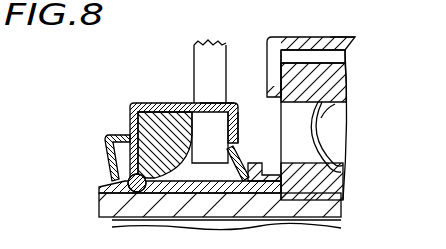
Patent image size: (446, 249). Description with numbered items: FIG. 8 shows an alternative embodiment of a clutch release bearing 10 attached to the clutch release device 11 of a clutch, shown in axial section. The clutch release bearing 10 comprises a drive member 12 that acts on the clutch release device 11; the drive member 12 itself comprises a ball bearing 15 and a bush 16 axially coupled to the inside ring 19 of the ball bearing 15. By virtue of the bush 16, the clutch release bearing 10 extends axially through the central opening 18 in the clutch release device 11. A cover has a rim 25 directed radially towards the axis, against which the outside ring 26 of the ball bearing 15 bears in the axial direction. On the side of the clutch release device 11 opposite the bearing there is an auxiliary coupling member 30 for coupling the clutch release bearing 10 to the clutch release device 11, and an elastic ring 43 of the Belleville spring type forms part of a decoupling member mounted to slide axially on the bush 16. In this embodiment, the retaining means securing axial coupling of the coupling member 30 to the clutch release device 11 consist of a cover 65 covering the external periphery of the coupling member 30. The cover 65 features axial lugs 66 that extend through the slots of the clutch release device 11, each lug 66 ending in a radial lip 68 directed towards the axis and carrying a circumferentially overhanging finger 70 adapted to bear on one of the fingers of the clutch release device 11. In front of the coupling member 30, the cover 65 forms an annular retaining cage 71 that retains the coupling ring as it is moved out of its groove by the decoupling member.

The clutch release bearing 10 is at (342, 33).
The clutch release device 11 is at (191, 44).
The drive member 12 is at (98, 198).
The ball bearing 15 is at (344, 63).
The bush 16 is at (99, 217).
The central opening 18 is at (178, 124).
The inside ring 19 is at (330, 190).
The rim 25 is at (267, 58).
The outside ring 26 is at (338, 78).
The coupling member 30 is at (134, 161).
The elastic ring 43 is at (243, 167).
The cover 65 is at (161, 102).
The axial lugs 66 is at (214, 103).
The radial lip 68 is at (241, 136).
The circumferentially overhanging finger 70 is at (210, 137).
The annular retaining cage 71 is at (112, 131).